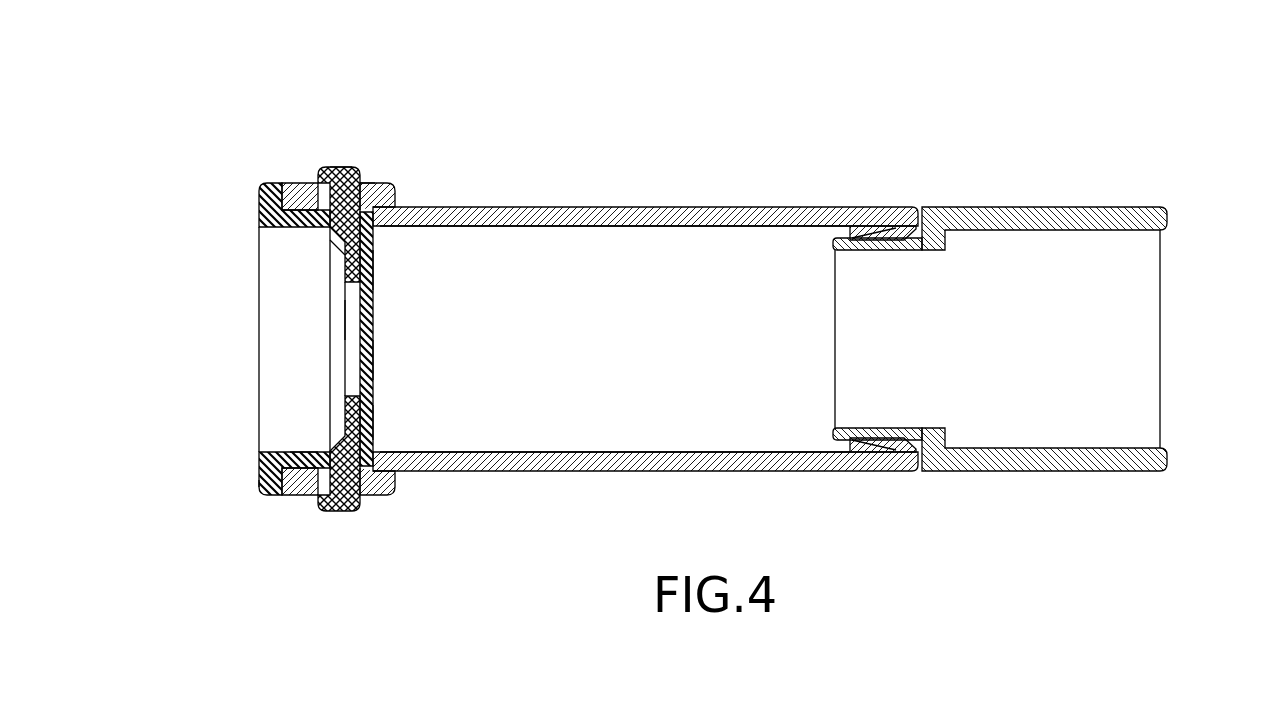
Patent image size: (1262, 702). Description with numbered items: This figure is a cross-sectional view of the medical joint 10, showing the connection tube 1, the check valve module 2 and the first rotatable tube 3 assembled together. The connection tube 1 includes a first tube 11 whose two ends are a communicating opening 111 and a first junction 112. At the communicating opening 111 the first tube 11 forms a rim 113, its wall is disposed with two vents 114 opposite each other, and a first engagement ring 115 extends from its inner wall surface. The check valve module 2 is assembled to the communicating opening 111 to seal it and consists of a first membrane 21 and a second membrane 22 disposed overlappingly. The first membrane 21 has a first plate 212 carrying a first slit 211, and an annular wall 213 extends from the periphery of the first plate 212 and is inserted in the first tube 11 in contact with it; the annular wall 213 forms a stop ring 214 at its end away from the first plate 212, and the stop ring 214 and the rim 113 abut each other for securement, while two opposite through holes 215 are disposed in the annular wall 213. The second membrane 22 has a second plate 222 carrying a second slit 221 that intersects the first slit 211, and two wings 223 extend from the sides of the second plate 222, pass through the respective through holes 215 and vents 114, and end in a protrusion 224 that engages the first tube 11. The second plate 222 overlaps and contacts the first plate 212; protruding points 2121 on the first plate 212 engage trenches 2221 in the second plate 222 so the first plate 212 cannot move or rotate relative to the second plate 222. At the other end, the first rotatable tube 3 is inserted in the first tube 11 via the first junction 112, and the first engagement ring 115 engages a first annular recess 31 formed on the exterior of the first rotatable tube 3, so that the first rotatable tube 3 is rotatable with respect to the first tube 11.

The medical joint 10 is at (698, 24).
The connection tube 1 is at (676, 203).
The first tube 11 is at (593, 207).
The communicating opening 111 is at (300, 452).
The first junction 112 is at (903, 450).
The rim 113 is at (265, 498).
The vents 114 is at (357, 182).
The first engagement ring 115 is at (858, 242).
The check valve module 2 is at (180, 177).
The first membrane 21 is at (256, 206).
The first slit 211 is at (375, 358).
The protruding points 2121 is at (375, 420).
The first plate 212 is at (375, 266).
The annular wall 213 is at (301, 183).
The stop ring 214 is at (264, 476).
The through holes 215 is at (340, 168).
The second membrane 22 is at (336, 258).
The second slit 221 is at (352, 323).
The second plate 222 is at (332, 268).
The wings 223 is at (397, 187).
The protrusion 224 is at (328, 168).
The trenches 2221 is at (356, 511).
The first rotatable tube 3 is at (1130, 207).
The first annular recess 31 is at (888, 215).